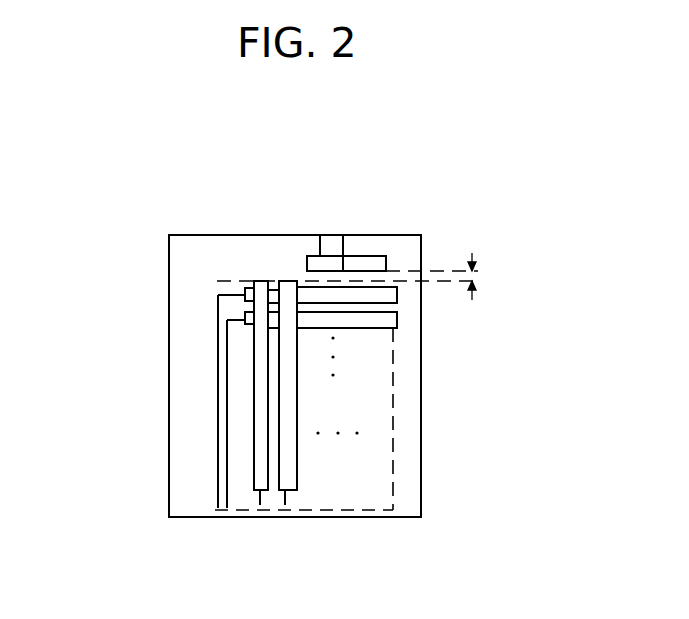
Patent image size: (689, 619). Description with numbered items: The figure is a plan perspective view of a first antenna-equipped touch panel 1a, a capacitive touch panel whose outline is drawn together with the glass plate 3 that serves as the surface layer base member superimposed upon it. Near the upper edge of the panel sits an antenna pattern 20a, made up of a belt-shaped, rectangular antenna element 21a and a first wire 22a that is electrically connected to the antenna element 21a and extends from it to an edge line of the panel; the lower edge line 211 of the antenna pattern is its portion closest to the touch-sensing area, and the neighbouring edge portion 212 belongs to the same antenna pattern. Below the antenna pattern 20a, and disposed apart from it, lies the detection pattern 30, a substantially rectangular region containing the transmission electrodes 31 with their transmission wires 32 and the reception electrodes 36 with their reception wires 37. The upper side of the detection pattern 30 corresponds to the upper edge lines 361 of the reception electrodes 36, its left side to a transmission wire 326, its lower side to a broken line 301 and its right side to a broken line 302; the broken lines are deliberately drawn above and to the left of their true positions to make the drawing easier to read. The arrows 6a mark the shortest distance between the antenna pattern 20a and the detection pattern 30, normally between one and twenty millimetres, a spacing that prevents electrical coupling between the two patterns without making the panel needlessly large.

The first antenna-equipped touch panel 1a is at (370, 151).
The glass plate 3 is at (197, 234).
The antenna pattern 20a is at (208, 178).
The antenna element 21a is at (307, 265).
The first wire 22a is at (320, 250).
The lower edge line 211 is at (345, 270).
The terminal part 212 is at (370, 256).
The arrows 6a is at (473, 275).
The upper edge lines 361 is at (265, 283).
The transmission wire 326 is at (216, 432).
The transmission wires 32 is at (213, 493).
The reception wires 37 is at (258, 495).
The reception electrodes 36 is at (287, 450).
The transmission electrodes 31 is at (337, 297).
The detection pattern 30 is at (377, 467).
The broken line 302 is at (395, 480).
The broken line 301 is at (362, 510).